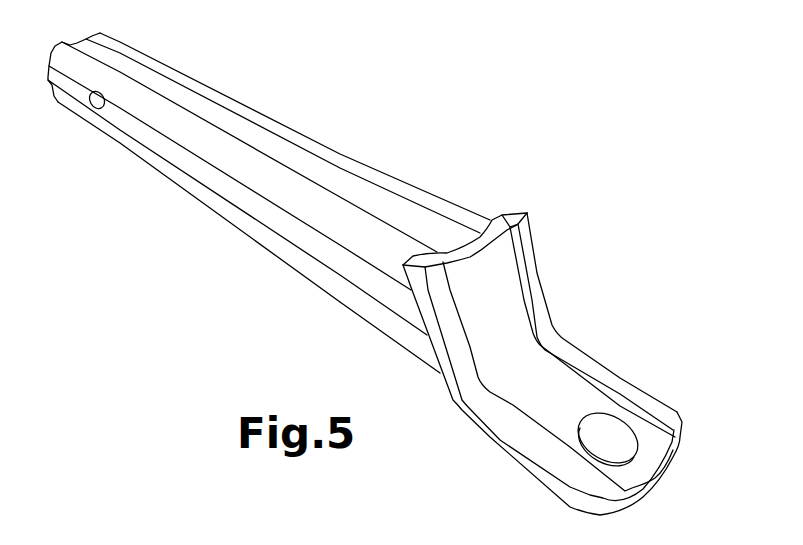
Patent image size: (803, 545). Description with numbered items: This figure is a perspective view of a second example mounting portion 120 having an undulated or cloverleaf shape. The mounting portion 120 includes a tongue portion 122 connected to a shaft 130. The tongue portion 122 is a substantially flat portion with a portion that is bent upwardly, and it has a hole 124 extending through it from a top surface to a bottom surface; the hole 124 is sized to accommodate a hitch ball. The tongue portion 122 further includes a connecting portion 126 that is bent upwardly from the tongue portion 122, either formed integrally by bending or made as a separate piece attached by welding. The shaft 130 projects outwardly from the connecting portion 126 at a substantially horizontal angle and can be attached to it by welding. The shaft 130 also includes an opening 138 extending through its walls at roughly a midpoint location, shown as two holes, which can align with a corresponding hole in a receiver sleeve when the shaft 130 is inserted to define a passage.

The mounting portion 120 is at (386, 275).
The tongue portion 122 is at (564, 365).
The hole 124 is at (615, 412).
The connecting portion 126 is at (548, 287).
The shaft 130 is at (260, 203).
The opening 138 is at (91, 106).